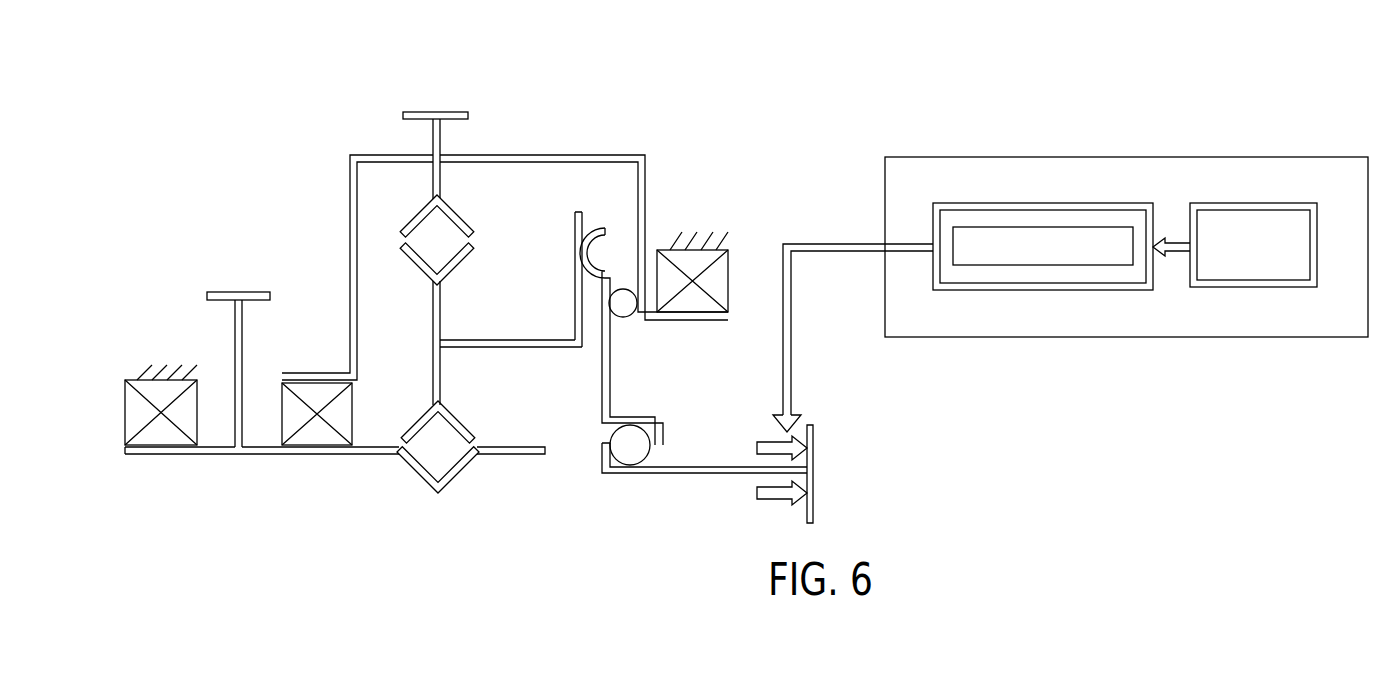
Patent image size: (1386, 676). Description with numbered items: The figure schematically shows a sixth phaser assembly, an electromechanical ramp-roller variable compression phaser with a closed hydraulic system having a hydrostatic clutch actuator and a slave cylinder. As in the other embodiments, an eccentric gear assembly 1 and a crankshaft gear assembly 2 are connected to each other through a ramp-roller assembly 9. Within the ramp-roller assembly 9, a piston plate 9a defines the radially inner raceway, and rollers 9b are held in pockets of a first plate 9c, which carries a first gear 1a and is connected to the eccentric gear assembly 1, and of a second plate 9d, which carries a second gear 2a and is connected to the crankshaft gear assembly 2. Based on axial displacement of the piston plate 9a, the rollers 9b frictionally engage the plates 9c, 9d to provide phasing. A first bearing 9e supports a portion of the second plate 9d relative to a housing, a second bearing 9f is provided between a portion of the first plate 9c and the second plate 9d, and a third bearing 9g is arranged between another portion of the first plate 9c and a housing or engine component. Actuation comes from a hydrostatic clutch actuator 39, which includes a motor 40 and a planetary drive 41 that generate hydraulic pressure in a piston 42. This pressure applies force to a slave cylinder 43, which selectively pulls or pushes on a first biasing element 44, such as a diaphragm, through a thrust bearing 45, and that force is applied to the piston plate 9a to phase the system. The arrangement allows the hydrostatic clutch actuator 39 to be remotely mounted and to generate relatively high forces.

The eccentric gear assembly 1 is at (214, 286).
The first gear 1a is at (258, 292).
The crankshaft gear assembly 2 is at (390, 138).
The second gear 2a is at (447, 110).
The ramp-roller assembly 9 is at (414, 304).
The piston plate 9a is at (433, 360).
The rollers 9b is at (476, 232).
The first plate 9c is at (415, 470).
The second plate 9d is at (427, 201).
The first bearing 9e is at (698, 272).
The second bearing 9f is at (316, 395).
The third bearing 9g is at (140, 414).
The hydrostatic clutch actuator 39 is at (952, 157).
The motor 40 is at (1246, 203).
The planetary drive 41 is at (1041, 203).
The piston 42 is at (1100, 227).
The slave cylinder 43 is at (815, 470).
The first biasing element 44 is at (602, 355).
The thrust bearing 45 is at (603, 446).